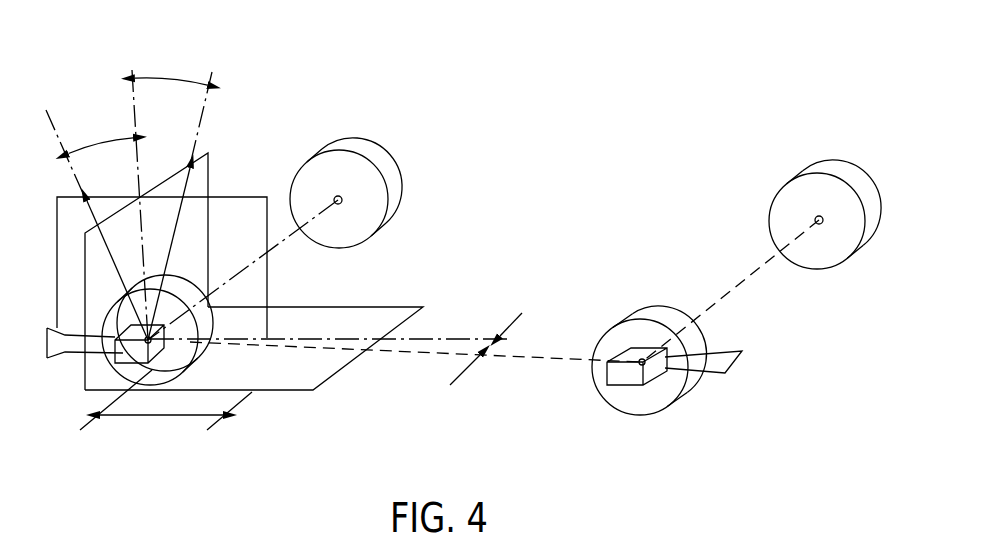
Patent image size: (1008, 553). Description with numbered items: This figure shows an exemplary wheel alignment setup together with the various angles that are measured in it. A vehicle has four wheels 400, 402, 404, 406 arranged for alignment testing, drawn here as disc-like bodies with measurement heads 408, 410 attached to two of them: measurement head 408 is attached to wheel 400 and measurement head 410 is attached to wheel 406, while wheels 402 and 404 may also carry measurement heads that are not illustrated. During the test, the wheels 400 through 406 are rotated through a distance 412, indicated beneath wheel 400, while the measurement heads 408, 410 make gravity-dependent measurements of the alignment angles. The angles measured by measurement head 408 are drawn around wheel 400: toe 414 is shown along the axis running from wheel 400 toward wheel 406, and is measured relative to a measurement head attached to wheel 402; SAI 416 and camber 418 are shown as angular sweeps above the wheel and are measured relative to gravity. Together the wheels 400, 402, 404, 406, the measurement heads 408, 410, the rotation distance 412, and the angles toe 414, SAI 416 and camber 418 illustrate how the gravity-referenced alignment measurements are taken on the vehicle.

The wheel 400 is at (204, 354).
The wheel 402 is at (395, 177).
The wheel 404 is at (815, 172).
The wheel 406 is at (683, 395).
The measurement head 408 is at (85, 366).
The measurement head 410 is at (617, 373).
The distance 412 is at (148, 416).
The toe 414 is at (492, 348).
The SAI 416 is at (100, 140).
The camber 418 is at (178, 77).